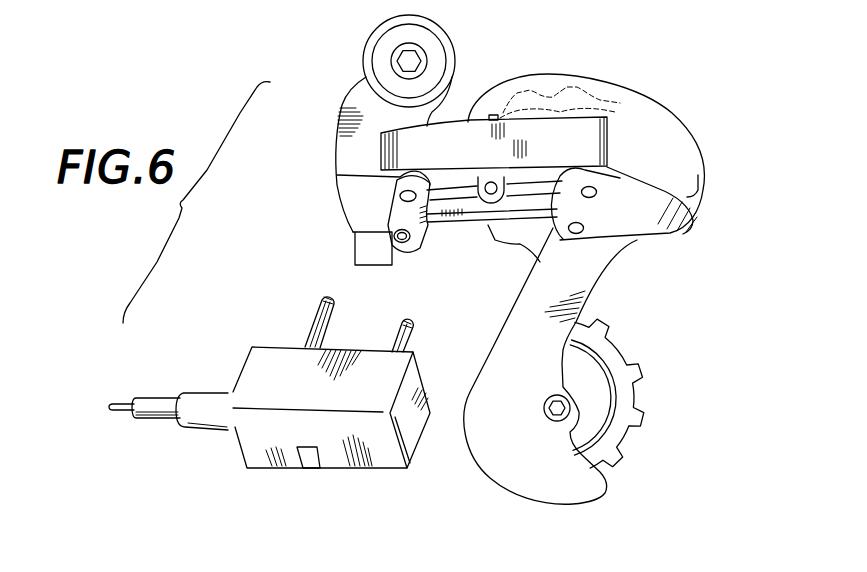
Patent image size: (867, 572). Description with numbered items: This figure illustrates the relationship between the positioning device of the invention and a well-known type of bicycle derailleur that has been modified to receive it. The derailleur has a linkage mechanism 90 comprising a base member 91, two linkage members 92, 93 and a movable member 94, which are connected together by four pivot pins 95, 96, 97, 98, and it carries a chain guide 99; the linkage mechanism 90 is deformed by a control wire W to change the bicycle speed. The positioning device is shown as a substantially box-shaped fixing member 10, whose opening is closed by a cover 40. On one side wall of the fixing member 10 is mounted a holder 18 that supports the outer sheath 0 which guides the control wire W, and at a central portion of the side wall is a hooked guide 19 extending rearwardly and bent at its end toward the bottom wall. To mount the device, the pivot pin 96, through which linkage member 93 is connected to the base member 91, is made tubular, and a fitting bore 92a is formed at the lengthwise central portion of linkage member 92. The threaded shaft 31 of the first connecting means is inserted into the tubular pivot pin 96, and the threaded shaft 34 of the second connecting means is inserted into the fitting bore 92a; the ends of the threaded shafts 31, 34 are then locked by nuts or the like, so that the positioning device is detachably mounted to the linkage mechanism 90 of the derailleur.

The fixing member 10 is at (413, 461).
The outer sheath holder 18 is at (207, 432).
The outer sheath 0 is at (163, 423).
The control wire W is at (115, 413).
The hooked guide 19 is at (308, 463).
The cover 40 is at (367, 472).
The threaded shaft of first connecting means 31 is at (318, 316).
The threaded shaft of second connecting means 34 is at (396, 333).
The linkage mechanism 90 is at (628, 113).
The base member 91 is at (340, 118).
The linkage member 92 is at (540, 122).
The fitting bore 92a is at (488, 181).
The linkage member 93 is at (468, 223).
The movable member 94 is at (698, 184).
The pivot pin 95 is at (400, 197).
The pivot pin 96 is at (402, 243).
The pivot pin 97 is at (594, 190).
The pivot pin 98 is at (580, 232).
The chain guide 99 is at (590, 299).